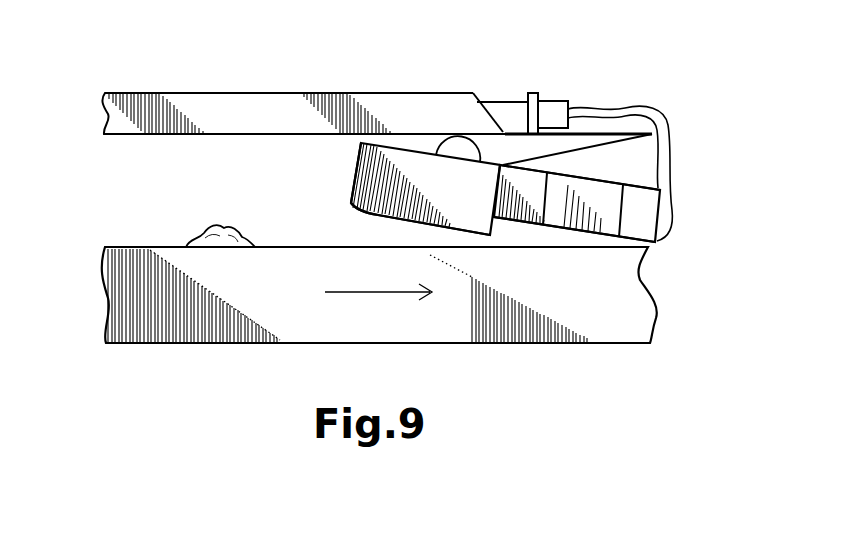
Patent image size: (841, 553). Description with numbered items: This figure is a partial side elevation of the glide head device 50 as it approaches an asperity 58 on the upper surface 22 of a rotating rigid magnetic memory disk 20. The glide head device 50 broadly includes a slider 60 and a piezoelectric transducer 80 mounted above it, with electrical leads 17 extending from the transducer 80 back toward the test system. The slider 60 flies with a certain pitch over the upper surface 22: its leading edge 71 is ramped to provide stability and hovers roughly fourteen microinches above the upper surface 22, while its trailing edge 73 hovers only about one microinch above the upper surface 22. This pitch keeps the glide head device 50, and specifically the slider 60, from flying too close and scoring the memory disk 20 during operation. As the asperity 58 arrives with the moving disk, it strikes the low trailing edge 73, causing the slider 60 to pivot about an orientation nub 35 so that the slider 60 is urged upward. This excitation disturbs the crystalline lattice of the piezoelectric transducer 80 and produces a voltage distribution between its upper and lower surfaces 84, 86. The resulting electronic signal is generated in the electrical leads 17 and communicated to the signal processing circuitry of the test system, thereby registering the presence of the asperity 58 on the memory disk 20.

The electrical leads 17 is at (600, 100).
The rigid magnetic memory disk 20 is at (212, 343).
The upper surface 22 is at (140, 247).
The orientation nub 35 is at (457, 150).
The glide head device 50 is at (336, 160).
The asperity 58 is at (218, 228).
The slider 60 is at (398, 160).
The leading edge 71 is at (353, 203).
The trailing edge 73 is at (493, 223).
The piezoelectric transducer 80 is at (597, 203).
The upper surface of transducer 84 is at (598, 174).
The lower surface of transducer 86 is at (598, 233).